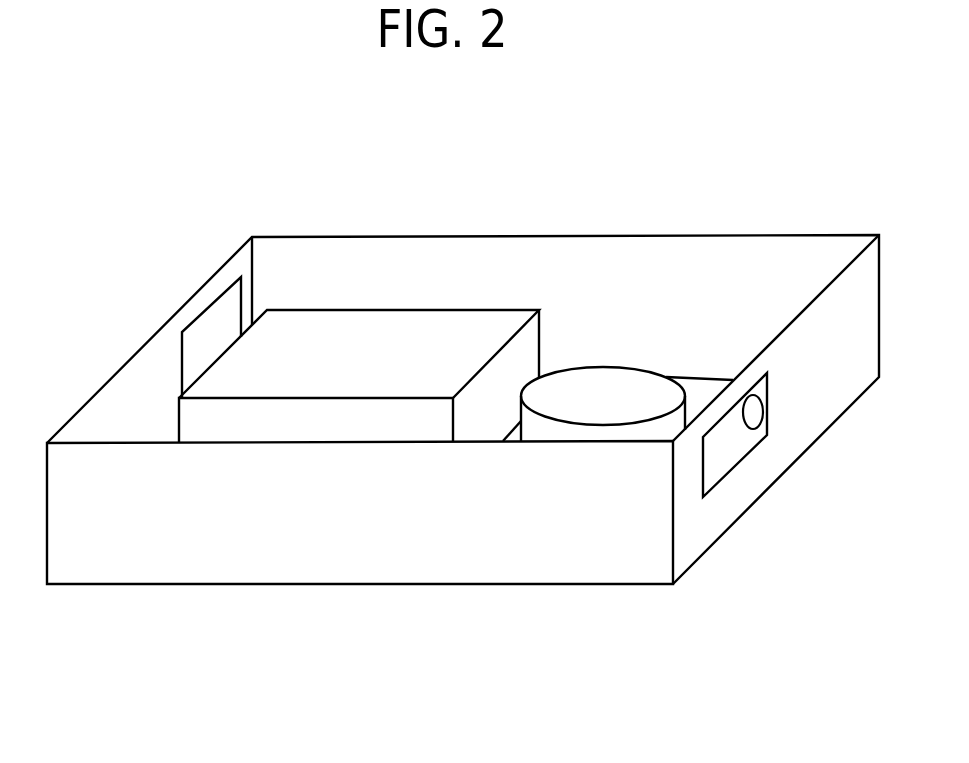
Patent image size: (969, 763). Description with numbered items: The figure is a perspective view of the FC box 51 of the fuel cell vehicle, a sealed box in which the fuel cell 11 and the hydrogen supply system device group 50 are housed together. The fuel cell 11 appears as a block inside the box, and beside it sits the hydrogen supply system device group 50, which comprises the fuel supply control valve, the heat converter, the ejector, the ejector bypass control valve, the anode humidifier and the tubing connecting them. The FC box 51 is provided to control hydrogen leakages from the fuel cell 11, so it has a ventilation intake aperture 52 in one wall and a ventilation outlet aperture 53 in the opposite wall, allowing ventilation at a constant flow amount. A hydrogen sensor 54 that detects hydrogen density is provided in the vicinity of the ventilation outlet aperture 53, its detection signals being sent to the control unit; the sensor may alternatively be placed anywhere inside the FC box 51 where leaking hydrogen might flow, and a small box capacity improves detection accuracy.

The fuel cell 11 is at (410, 325).
The hydrogen supply system device group 50 is at (602, 380).
The FC box 51 is at (375, 567).
The ventilation intake aperture 52 is at (217, 312).
The ventilation outlet aperture 53 is at (723, 458).
The hydrogen sensor 54 is at (763, 408).